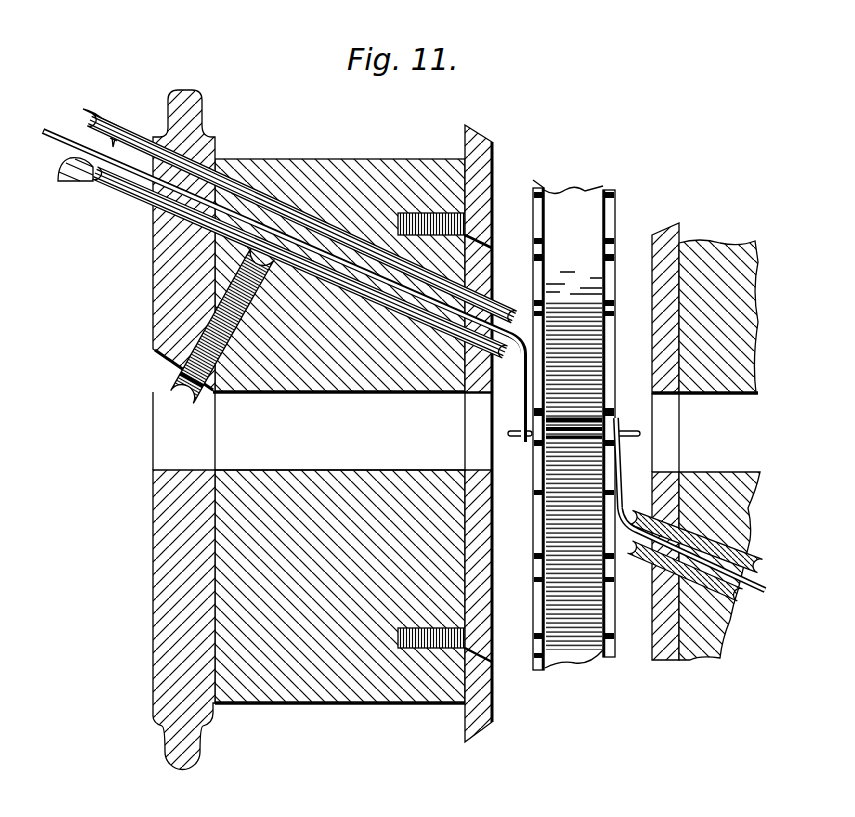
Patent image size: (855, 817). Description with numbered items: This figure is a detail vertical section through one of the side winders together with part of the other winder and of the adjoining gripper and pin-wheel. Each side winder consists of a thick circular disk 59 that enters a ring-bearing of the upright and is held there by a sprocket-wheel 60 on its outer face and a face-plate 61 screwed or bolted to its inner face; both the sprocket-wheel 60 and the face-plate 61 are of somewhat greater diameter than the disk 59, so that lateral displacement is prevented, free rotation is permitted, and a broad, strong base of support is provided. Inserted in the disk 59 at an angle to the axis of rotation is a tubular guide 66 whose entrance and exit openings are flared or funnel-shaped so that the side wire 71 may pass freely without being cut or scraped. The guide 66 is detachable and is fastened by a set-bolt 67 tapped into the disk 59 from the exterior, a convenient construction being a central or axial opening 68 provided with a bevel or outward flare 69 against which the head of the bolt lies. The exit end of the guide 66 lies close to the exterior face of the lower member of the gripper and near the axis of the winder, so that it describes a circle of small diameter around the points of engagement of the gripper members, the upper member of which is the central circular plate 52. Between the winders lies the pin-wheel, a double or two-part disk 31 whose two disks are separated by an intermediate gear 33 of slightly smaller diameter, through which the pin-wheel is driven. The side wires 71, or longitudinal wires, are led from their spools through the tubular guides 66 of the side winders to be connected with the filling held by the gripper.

The pin-wheel 31 is at (534, 592).
The intermediate gear 33 is at (568, 633).
The central circular plate 52 is at (580, 192).
The thick circular disk 59 is at (321, 158).
The sprocket-wheel 60 is at (153, 622).
The face-plate 61 is at (493, 718).
The tubular guide 66 is at (118, 190).
The set-bolt 67 is at (166, 383).
The central or axial opening 68 is at (340, 431).
The bevel or outward flare 69 is at (155, 352).
The side wires 71 is at (60, 122).